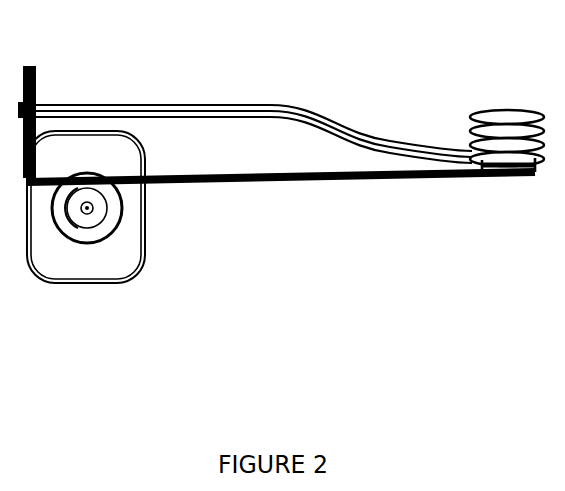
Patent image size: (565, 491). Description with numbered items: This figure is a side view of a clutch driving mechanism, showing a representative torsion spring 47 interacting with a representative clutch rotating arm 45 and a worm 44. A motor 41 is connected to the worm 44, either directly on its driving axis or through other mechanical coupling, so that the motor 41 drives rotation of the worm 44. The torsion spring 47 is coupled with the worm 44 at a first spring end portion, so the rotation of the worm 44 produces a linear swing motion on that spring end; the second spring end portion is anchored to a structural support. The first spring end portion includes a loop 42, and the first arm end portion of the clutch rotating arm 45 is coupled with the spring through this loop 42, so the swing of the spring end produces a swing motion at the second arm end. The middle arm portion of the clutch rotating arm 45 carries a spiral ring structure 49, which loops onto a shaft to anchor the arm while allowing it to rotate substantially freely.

The motor 41 is at (102, 248).
The loop 42 is at (33, 68).
The worm 44 is at (114, 208).
The clutch rotating arm 45 is at (327, 125).
The torsion spring 47 is at (322, 180).
The spiral ring structure 49 is at (520, 137).